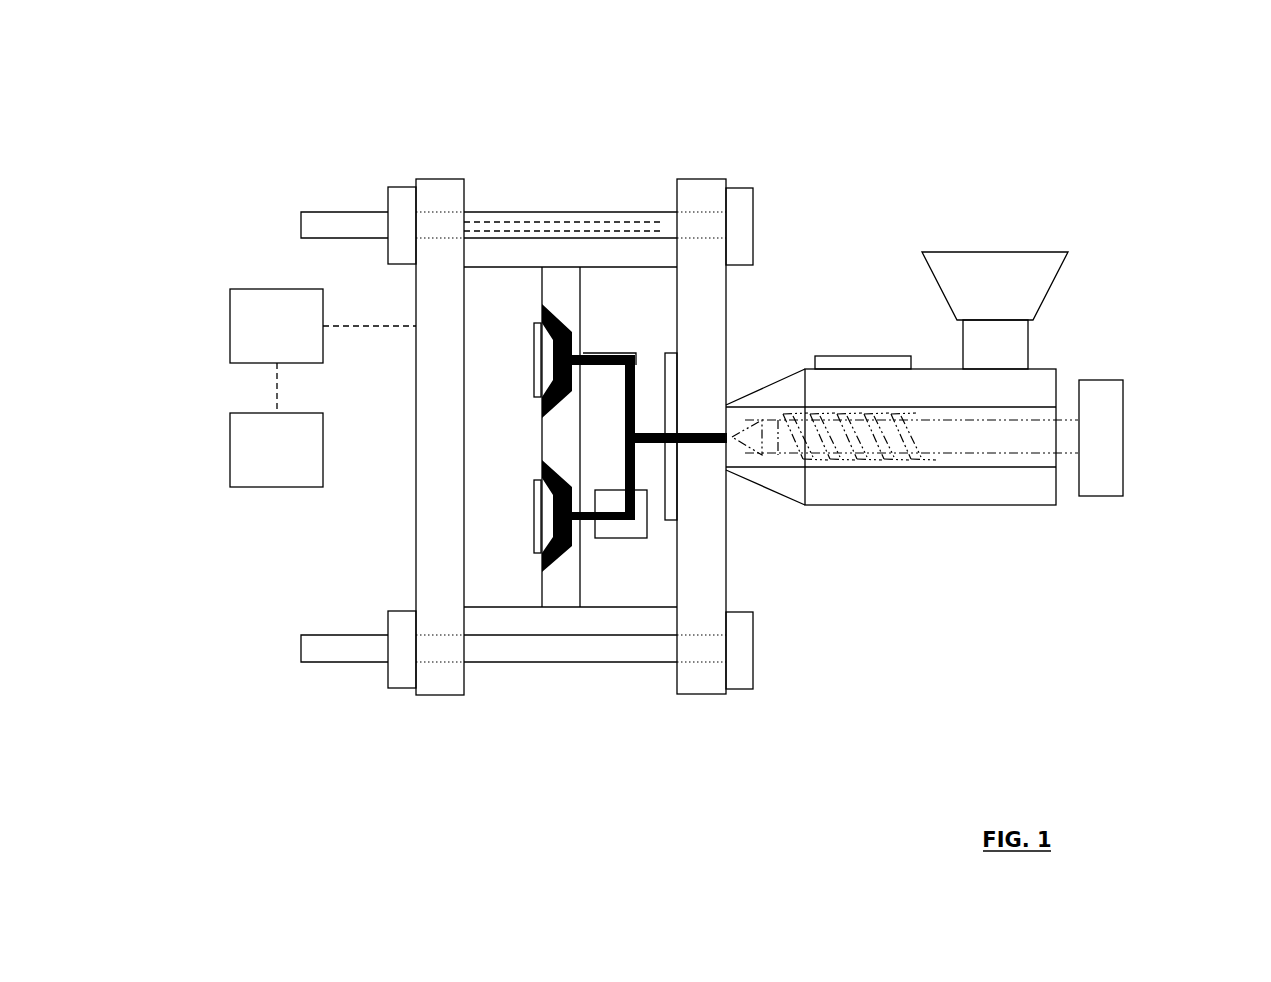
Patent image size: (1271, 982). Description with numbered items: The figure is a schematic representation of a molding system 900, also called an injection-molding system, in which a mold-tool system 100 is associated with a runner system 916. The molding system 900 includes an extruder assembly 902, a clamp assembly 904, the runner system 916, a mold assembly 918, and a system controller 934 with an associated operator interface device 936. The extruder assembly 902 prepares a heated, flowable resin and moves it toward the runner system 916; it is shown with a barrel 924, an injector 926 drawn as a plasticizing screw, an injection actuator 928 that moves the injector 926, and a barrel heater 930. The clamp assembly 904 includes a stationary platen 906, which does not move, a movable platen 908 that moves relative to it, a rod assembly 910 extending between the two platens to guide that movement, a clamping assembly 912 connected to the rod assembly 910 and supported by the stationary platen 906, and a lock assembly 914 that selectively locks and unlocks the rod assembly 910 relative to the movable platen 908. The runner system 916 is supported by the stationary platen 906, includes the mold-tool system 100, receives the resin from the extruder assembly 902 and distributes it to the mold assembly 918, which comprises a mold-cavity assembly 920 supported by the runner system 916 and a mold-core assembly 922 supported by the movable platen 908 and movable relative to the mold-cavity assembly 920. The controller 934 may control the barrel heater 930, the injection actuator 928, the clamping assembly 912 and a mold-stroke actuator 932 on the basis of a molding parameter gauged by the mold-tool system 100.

The mold-tool system 100 is at (648, 512).
The molding system 900 is at (686, 415).
The extruder assembly 902 is at (975, 405).
The clamp assembly 904 is at (509, 415).
The stationary platen 906 is at (702, 694).
The movable platen 908 is at (438, 695).
The rod assembly 910 is at (524, 662).
The clamping assembly 912 is at (740, 689).
The lock assembly 914 is at (400, 688).
The runner system 916 is at (626, 267).
The mold assembly 918 is at (543, 252).
The mold-cavity assembly 920 is at (564, 267).
The mold-core assembly 922 is at (522, 267).
The barrel 924 is at (930, 505).
The injector 926 is at (905, 436).
The injection actuator 928 is at (1100, 496).
The barrel heater 930 is at (865, 356).
The mold-stroke actuator 932 is at (659, 225).
The system controller 934 is at (273, 289).
The user interface 936 is at (272, 487).